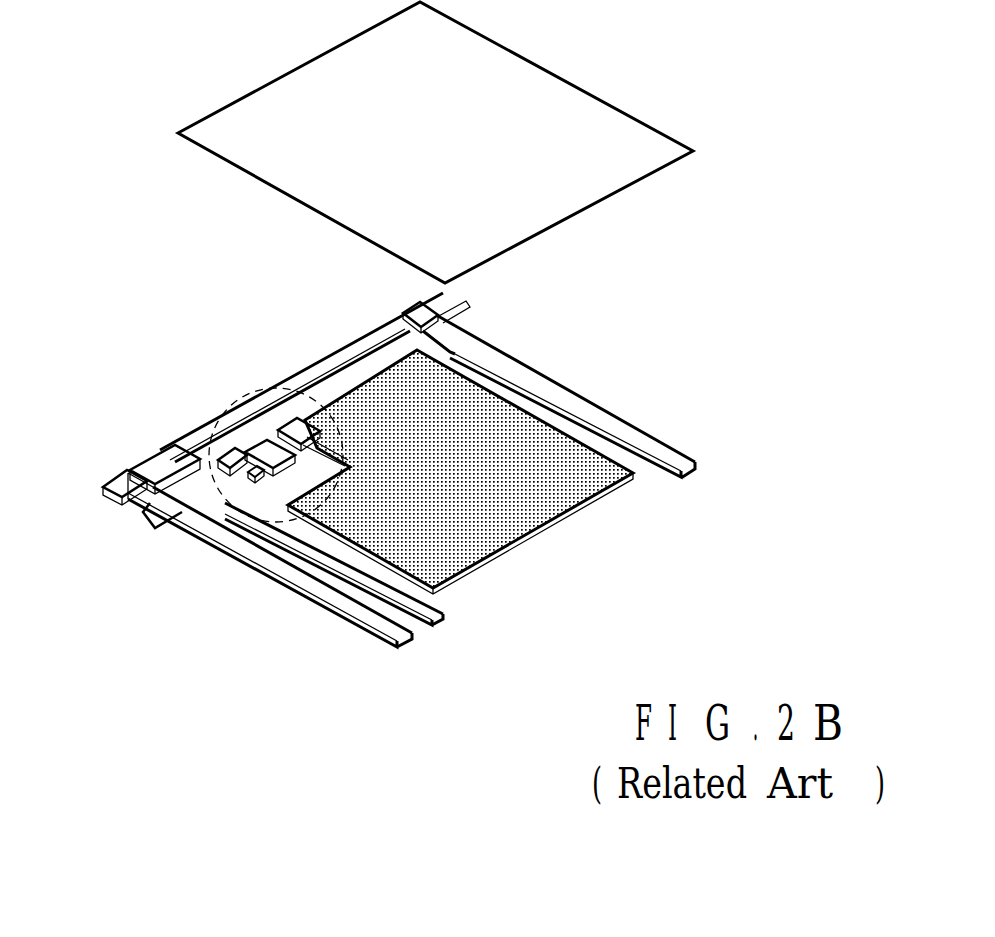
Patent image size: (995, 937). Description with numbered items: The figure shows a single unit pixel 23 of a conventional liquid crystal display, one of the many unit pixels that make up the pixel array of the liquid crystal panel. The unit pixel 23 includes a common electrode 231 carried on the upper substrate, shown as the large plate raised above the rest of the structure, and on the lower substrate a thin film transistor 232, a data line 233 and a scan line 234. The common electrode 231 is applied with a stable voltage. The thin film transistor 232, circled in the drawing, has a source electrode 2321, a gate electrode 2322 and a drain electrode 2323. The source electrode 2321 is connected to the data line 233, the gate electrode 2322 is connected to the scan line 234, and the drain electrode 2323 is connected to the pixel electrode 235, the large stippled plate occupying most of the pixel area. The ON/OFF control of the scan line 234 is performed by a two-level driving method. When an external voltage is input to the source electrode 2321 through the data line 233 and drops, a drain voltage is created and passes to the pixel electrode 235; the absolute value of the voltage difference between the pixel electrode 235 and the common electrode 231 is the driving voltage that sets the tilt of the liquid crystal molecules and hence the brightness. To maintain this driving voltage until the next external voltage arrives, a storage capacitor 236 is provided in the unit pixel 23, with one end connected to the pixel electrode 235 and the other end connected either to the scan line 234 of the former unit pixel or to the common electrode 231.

The unit pixel 23 is at (106, 60).
The common electrode 231 is at (527, 223).
The thin film transistor 232 is at (150, 514).
The source electrode 2321 is at (217, 447).
The gate electrode 2322 is at (252, 476).
The drain electrode 2323 is at (295, 418).
The data line 233 is at (440, 616).
The scan line 234 is at (378, 346).
The pixel electrode 235 is at (505, 540).
The storage capacitor 236 is at (633, 441).